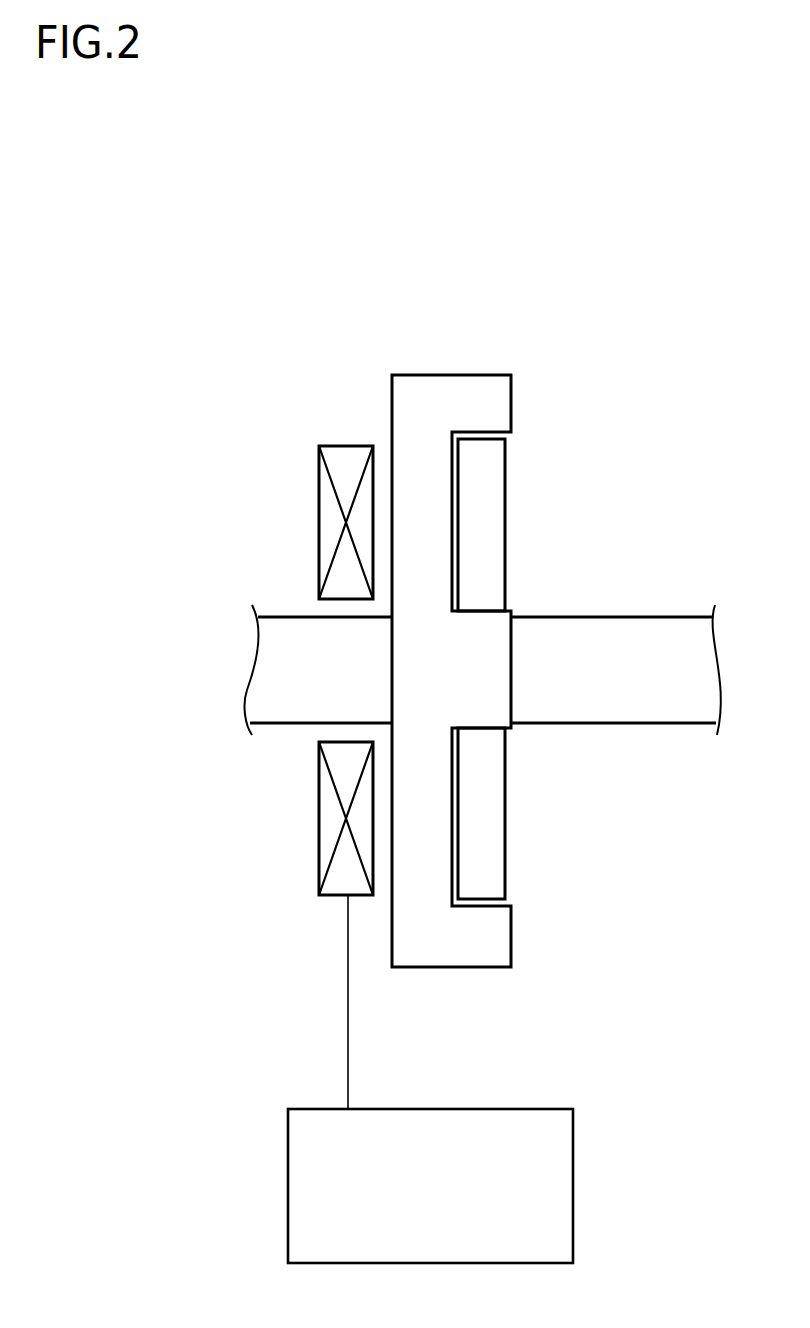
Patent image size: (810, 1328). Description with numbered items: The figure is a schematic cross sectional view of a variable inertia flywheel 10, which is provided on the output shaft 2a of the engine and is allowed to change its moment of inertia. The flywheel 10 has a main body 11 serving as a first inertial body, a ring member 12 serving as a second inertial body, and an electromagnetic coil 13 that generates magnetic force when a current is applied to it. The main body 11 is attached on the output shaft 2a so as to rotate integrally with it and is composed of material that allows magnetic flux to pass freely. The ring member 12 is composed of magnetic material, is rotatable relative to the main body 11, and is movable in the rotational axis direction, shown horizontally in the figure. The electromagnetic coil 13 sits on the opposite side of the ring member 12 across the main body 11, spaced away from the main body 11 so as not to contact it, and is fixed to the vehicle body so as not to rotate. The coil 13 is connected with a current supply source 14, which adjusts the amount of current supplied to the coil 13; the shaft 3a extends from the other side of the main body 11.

The variable inertia flywheel 10 is at (393, 267).
The main body 11 is at (482, 387).
The ring member 12 is at (495, 492).
The electromagnetic coil 13 is at (325, 510).
The current supply source 14 is at (573, 1203).
The output shaft 2a is at (280, 681).
The output shaft 3a is at (638, 637).